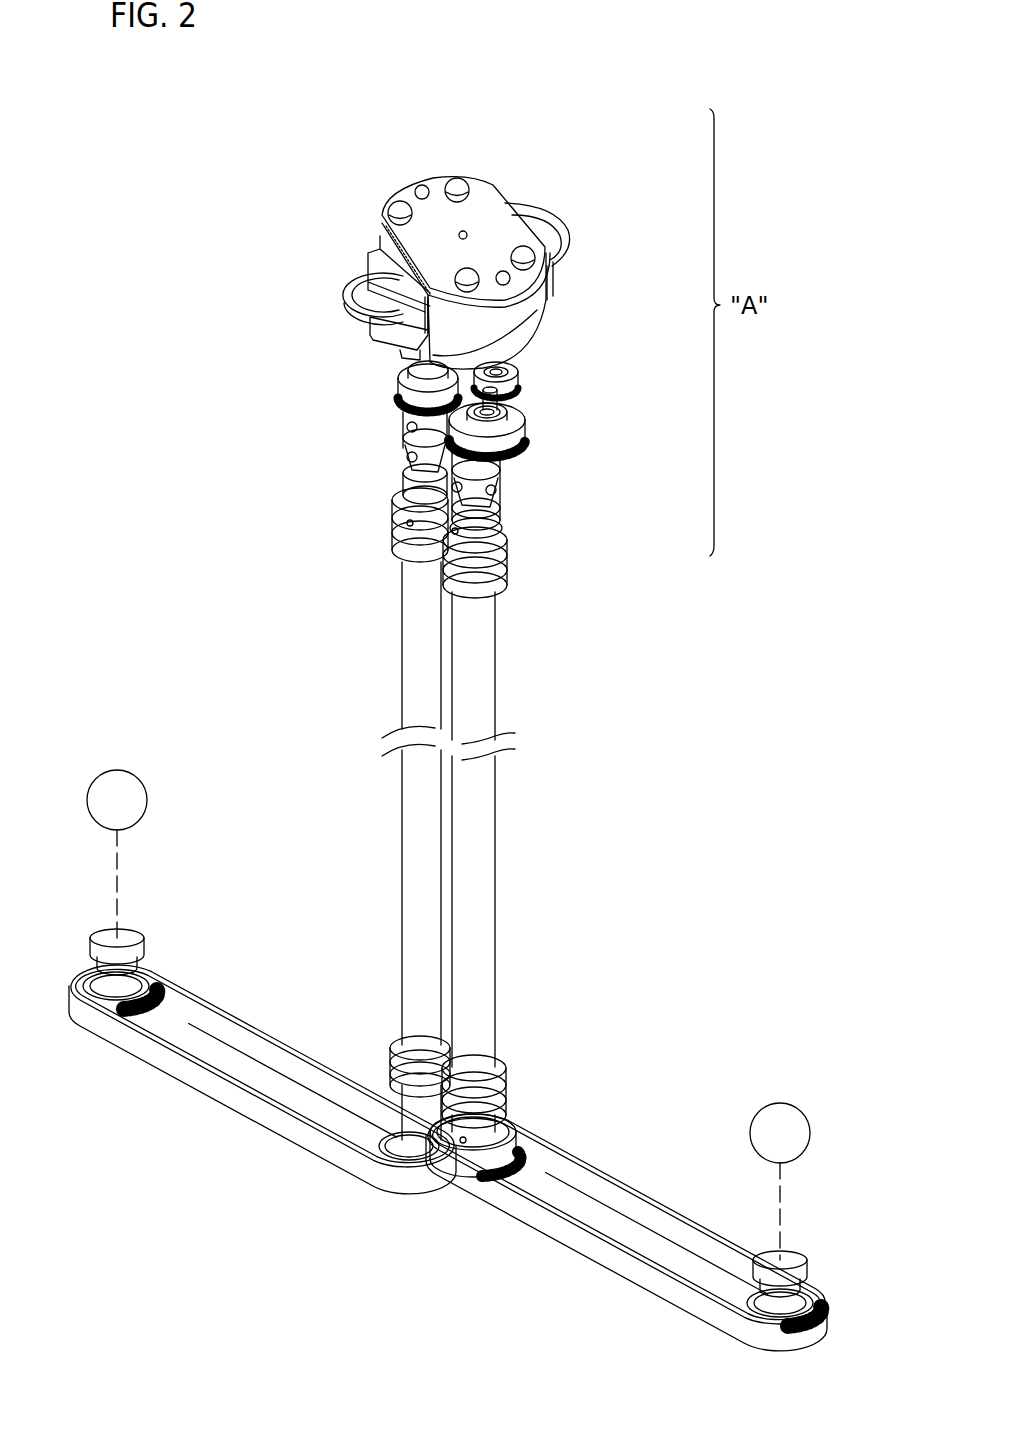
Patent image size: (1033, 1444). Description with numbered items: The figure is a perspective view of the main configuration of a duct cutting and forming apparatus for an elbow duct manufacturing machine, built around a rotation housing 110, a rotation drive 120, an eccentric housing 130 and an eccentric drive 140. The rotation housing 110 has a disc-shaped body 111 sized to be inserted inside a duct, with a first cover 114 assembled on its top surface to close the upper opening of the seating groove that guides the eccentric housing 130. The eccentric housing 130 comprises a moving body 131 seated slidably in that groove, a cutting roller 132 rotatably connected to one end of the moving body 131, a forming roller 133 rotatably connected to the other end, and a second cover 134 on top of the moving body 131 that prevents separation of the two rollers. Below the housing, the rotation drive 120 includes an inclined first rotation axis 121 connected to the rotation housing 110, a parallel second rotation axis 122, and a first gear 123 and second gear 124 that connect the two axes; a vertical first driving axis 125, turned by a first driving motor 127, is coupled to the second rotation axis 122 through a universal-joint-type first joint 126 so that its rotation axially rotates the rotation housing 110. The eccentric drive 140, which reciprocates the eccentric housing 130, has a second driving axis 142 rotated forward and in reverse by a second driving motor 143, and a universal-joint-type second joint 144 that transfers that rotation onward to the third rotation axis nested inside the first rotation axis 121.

The rotation housing 110 is at (370, 181).
The disc-shaped body 111 is at (513, 318).
The first cover 114 is at (486, 203).
The rotation drive 120 is at (531, 822).
The first rotation axis 121 is at (518, 385).
The second rotation axis 122 is at (524, 410).
The first gear 123 is at (400, 385).
The second gear 124 is at (526, 440).
The first driving axis 125 is at (498, 888).
The first joint 126 is at (502, 520).
The first driving motor 127 is at (780, 1103).
The eccentric housing 130 is at (346, 241).
The moving body 131 is at (368, 327).
The cutting roller 132 is at (357, 297).
The forming roller 133 is at (555, 230).
The second cover 134 is at (385, 272).
The eccentric drive 140 is at (374, 820).
The second driving axis 142 is at (403, 888).
The second driving motor 143 is at (117, 770).
The second joint 144 is at (404, 480).